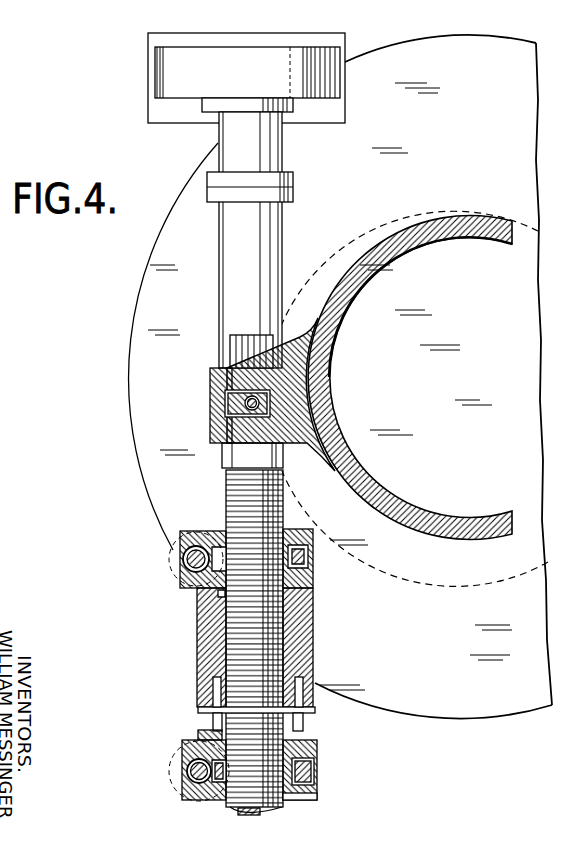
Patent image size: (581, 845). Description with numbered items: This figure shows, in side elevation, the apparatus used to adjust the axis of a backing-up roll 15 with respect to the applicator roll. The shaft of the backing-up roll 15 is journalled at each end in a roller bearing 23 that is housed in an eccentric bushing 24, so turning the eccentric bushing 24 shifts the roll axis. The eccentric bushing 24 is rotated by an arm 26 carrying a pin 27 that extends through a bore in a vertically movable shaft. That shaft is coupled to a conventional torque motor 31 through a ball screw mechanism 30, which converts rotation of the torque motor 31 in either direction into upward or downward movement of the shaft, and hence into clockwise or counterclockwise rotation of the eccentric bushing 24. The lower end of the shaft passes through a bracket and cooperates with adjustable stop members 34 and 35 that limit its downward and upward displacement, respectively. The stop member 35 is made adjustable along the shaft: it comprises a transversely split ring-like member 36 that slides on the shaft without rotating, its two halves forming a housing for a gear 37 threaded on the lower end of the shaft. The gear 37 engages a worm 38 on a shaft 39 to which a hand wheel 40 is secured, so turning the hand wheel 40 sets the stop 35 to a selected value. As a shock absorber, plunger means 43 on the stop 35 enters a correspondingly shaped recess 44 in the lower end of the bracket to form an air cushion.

The backing-up roll 15 is at (141, 313).
The roller bearing 23 is at (393, 238).
The eccentric bushing 24 is at (425, 589).
The arm 26 is at (305, 373).
The pin 27 is at (211, 405).
The ball screw mechanism 30 is at (219, 147).
The torque motor 31 is at (333, 80).
The adjustable stop member 34 is at (178, 566).
The adjustable stop member 35 is at (182, 790).
The ring-like member 36 is at (317, 751).
The gear 37 is at (312, 800).
The worm 38 is at (195, 753).
The shaft 39 is at (186, 772).
The hand wheel 40 is at (170, 553).
The plunger means 43 is at (304, 722).
The recess 44 is at (213, 686).